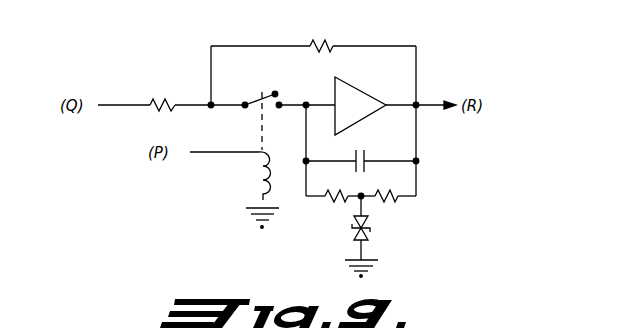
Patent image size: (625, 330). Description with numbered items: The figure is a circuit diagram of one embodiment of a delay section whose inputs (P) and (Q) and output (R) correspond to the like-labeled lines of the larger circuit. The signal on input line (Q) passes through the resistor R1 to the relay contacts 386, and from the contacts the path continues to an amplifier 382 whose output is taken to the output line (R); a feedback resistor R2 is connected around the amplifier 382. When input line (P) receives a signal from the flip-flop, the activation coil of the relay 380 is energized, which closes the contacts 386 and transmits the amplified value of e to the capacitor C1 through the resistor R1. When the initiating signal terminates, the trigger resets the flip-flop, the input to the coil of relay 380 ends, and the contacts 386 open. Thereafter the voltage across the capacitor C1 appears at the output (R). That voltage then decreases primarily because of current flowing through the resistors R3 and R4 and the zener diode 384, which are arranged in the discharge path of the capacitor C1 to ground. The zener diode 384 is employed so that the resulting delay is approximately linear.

The relay 380 is at (260, 173).
The amplifier 382 is at (352, 87).
The zener diode 384 is at (369, 233).
The relay contacts 386 is at (281, 101).
The resistor R1 is at (161, 94).
The feedback resistor R2 is at (321, 37).
The resistor R3 is at (329, 209).
The resistor R4 is at (388, 209).
The capacitor C1 is at (361, 157).